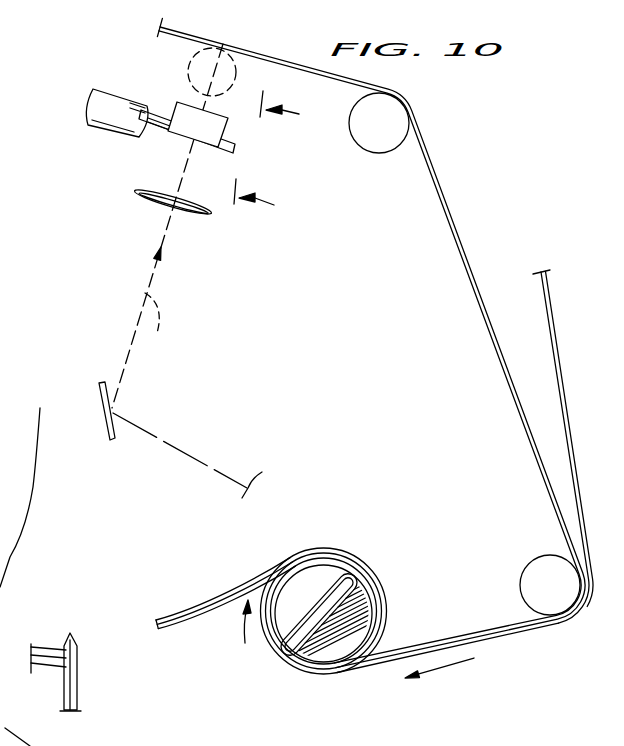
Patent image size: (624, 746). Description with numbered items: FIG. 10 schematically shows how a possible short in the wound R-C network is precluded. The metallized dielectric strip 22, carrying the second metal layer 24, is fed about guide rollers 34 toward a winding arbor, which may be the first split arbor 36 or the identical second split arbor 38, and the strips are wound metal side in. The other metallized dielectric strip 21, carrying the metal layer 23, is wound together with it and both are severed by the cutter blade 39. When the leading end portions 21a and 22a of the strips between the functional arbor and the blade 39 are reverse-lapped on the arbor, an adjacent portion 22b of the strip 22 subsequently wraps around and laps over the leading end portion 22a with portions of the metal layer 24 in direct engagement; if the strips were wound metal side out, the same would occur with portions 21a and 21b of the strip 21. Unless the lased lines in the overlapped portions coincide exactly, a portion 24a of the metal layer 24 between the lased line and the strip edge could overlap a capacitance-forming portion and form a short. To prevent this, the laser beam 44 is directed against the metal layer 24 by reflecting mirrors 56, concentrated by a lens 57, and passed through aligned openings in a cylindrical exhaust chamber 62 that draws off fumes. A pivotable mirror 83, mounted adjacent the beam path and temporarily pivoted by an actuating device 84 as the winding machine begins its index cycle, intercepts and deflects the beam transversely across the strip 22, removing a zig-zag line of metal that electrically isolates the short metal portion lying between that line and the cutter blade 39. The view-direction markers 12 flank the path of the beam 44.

The section line indicator 12 is at (279, 154).
The metallized dielectric strip 21 is at (555, 350).
The leading end portion of strip 21a is at (212, 610).
The leading end portion of strip 21b is at (497, 642).
The metallized dielectric strip 22 is at (449, 208).
The leading end portion of strip 22a is at (335, 551).
The adjacent portion of dielectric strip 22b is at (439, 645).
The metal layer 23 is at (552, 378).
The second metal layer 24 is at (187, 33).
The portion of metal layer 24a is at (180, 610).
The guide rollers 34 is at (367, 138).
The first arbor 36 is at (323, 650).
The second split arbor 38 is at (368, 632).
The blade 39 is at (78, 667).
The laser beam 44 is at (160, 325).
The reflecting mirrors 56 is at (106, 383).
The lens 57 is at (155, 205).
The cylindrical exhaust chamber 62 is at (188, 60).
The pivotable mirror 83 is at (185, 122).
The actuating device 84 is at (117, 100).